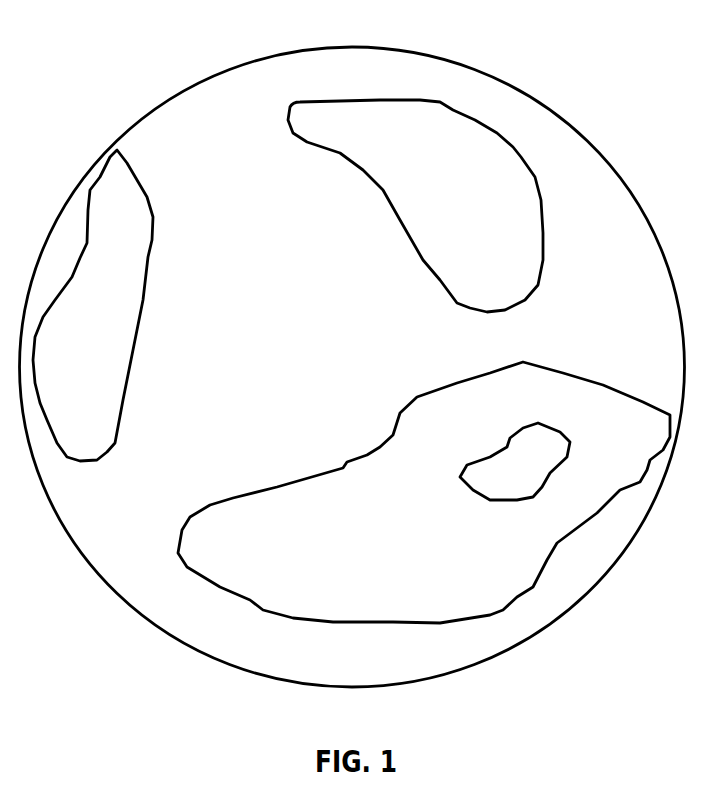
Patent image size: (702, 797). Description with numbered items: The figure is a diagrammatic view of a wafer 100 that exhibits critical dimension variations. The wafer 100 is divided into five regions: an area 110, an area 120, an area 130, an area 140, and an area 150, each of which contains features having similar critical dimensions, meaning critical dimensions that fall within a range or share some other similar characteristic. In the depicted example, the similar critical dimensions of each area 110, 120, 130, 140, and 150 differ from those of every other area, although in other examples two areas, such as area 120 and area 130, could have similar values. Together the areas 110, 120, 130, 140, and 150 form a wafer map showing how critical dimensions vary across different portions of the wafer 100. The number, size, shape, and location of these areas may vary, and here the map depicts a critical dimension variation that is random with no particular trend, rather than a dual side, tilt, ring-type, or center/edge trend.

The wafer 100 is at (606, 99).
The area 110 is at (329, 324).
The area 120 is at (74, 326).
The area 130 is at (446, 225).
The area 140 is at (300, 578).
The area 150 is at (486, 488).